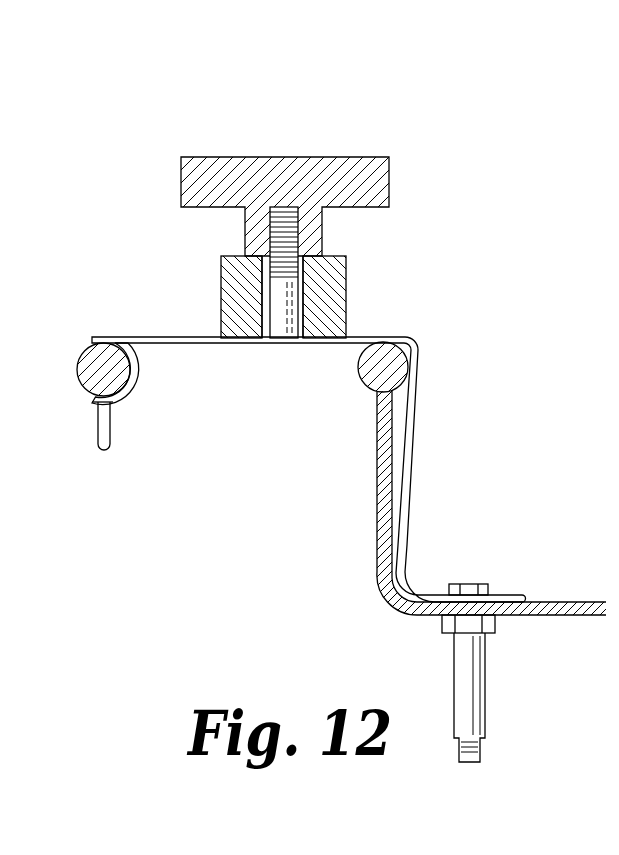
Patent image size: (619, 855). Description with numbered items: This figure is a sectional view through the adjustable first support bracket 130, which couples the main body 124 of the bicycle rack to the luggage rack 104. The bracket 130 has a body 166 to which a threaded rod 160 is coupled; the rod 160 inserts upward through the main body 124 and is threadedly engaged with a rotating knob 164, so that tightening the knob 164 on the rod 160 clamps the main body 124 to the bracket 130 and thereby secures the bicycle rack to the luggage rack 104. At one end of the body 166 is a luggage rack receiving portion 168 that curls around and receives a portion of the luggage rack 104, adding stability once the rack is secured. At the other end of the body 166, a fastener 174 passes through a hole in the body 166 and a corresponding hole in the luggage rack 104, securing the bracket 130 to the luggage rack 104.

The first support bracket 130 is at (303, 396).
The rotating knob 164 is at (356, 178).
The threaded rod 160 is at (276, 238).
The main body 124 is at (336, 298).
The luggage rack 104 is at (98, 367).
The luggage rack receiving portion 168 is at (126, 393).
The body 166 is at (411, 430).
The fastener 174 is at (470, 584).